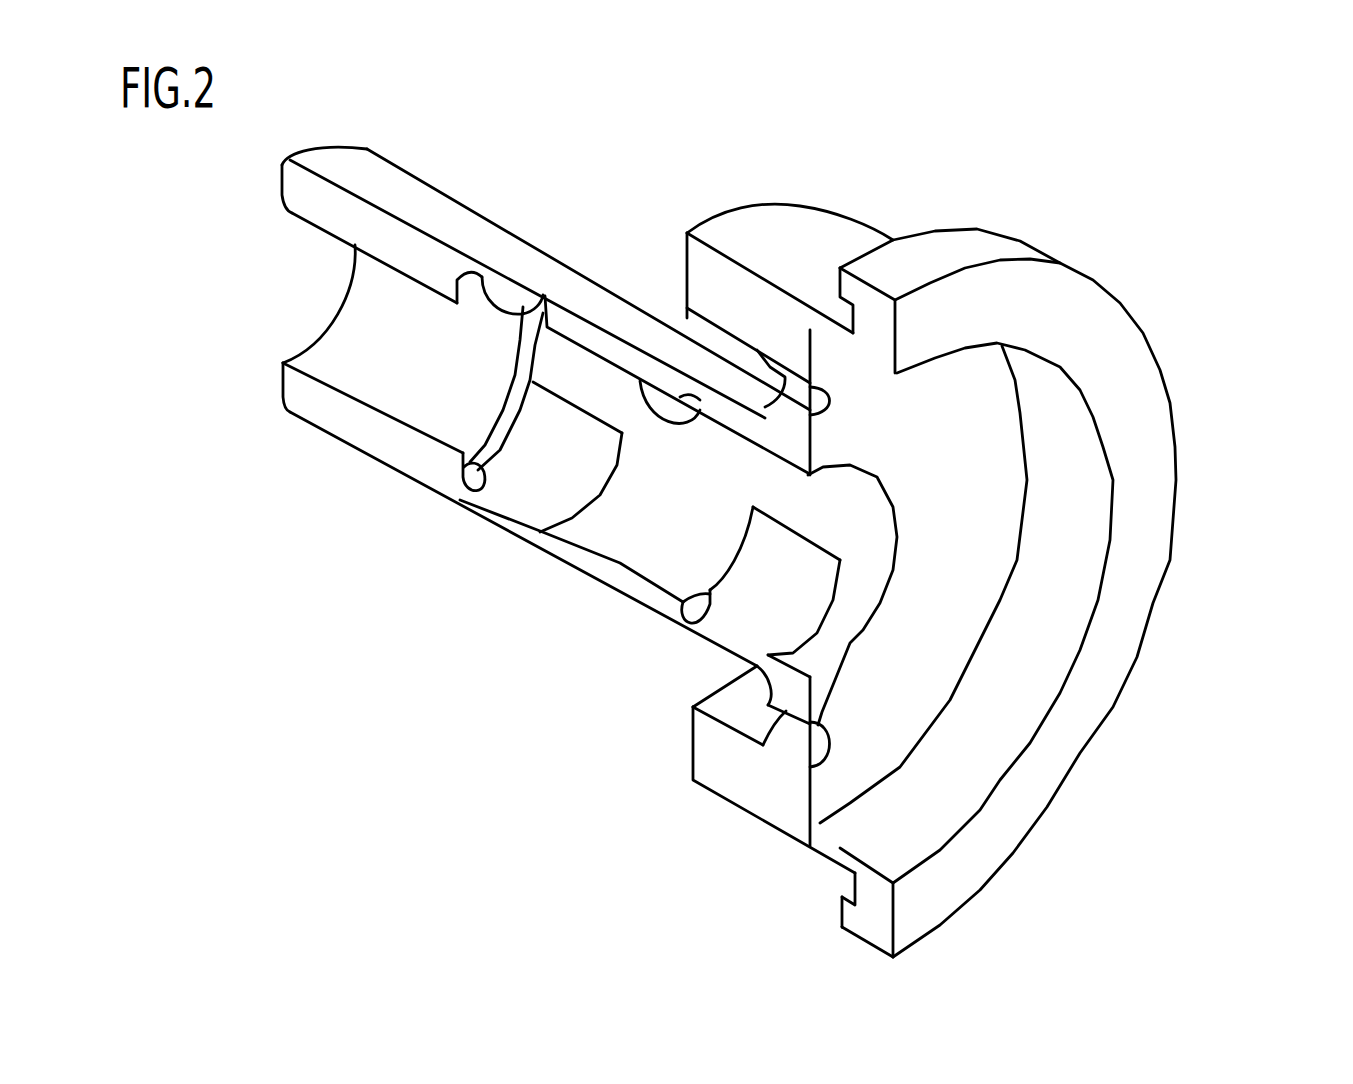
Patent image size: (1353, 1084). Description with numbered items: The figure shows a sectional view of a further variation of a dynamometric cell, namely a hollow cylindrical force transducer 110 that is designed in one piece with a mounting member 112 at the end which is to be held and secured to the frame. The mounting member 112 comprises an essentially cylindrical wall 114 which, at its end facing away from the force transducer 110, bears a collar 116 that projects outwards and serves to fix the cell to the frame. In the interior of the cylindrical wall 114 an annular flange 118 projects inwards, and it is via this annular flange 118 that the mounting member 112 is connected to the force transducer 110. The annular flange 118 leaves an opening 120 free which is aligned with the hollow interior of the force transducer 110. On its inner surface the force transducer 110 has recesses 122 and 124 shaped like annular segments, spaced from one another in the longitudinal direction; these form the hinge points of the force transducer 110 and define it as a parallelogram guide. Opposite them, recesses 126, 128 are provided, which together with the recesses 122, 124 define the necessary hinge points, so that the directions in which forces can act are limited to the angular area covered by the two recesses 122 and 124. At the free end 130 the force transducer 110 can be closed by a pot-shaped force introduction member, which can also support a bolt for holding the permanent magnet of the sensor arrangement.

The force transducer 110 is at (480, 446).
The mounting member 112 is at (1053, 502).
The cylindrical wall 114 is at (797, 224).
The collar 116 is at (1147, 418).
The annular flange 118 is at (950, 438).
The opening 120 is at (840, 597).
The recess 122 is at (700, 627).
The recess 124 is at (460, 502).
The recess 126 is at (660, 410).
The recess 128 is at (502, 310).
The free end 130 is at (277, 278).